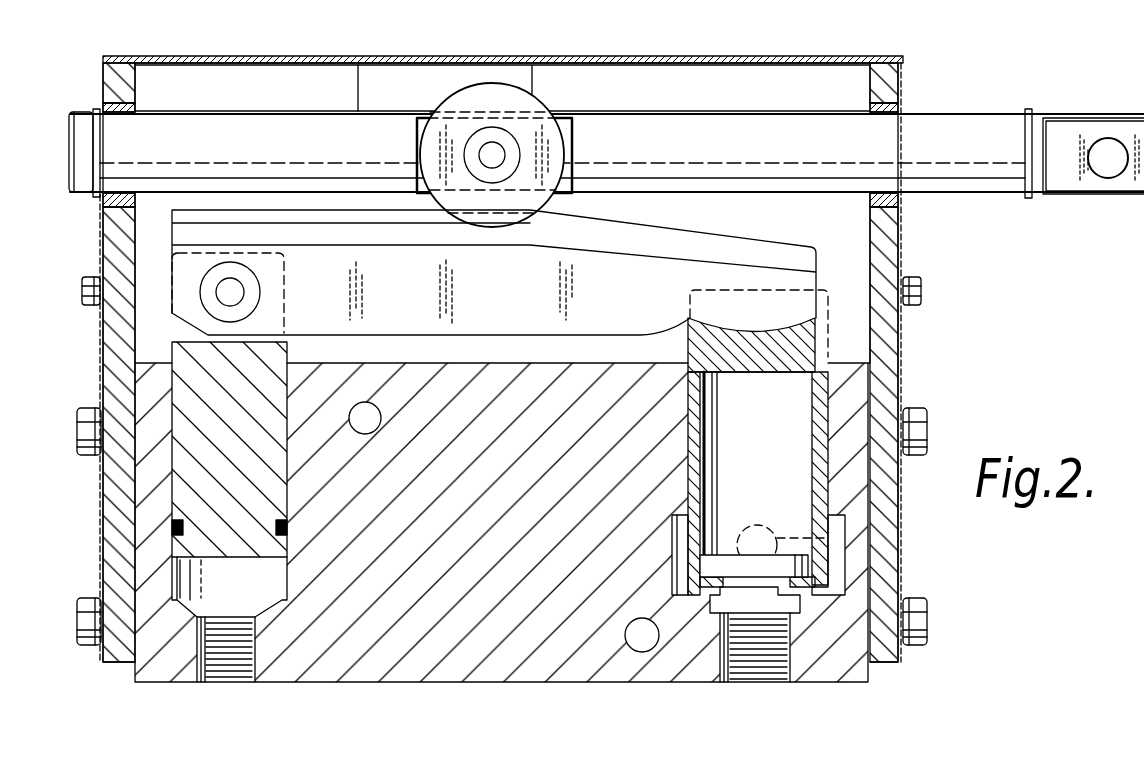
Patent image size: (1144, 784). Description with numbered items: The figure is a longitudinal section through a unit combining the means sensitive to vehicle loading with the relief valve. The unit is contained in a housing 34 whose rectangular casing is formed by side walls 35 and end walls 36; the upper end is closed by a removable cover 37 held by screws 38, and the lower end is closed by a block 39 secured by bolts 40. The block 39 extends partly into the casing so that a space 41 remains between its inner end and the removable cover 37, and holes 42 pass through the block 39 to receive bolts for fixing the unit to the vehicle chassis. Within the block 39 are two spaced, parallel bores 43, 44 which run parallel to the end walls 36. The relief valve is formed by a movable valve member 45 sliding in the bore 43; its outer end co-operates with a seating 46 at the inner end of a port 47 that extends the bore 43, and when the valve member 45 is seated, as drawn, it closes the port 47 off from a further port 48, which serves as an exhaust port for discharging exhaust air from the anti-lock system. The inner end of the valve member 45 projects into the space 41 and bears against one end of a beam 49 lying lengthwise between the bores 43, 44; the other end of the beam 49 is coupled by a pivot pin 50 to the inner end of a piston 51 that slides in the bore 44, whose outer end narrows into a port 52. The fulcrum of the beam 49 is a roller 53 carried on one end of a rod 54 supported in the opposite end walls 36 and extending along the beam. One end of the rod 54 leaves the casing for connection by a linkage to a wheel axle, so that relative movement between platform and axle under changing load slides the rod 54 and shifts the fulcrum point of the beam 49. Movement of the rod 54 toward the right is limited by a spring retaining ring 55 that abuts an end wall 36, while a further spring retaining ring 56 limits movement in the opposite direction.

The housing 34 is at (633, 44).
The side walls 35 is at (803, 72).
The end walls 36 is at (117, 236).
The removable cover 37 is at (287, 56).
The screws 38 is at (92, 312).
The block 39 is at (490, 668).
The bolts 40 is at (90, 456).
The space 41 is at (630, 99).
The holes 42 is at (368, 404).
The bore 43 is at (808, 509).
The bore 44 is at (190, 570).
The movable valve member 45 is at (823, 400).
The seating 46 is at (806, 596).
The port 47 is at (767, 670).
The port 48 is at (828, 538).
The beam 49 is at (716, 272).
The pivot pin 50 is at (233, 292).
The piston 51 is at (188, 492).
The port 52 is at (232, 673).
The roller 53 is at (492, 90).
The rod 54 is at (988, 128).
The spring retaining ring 55 is at (96, 108).
The spring retaining ring 56 is at (1030, 112).